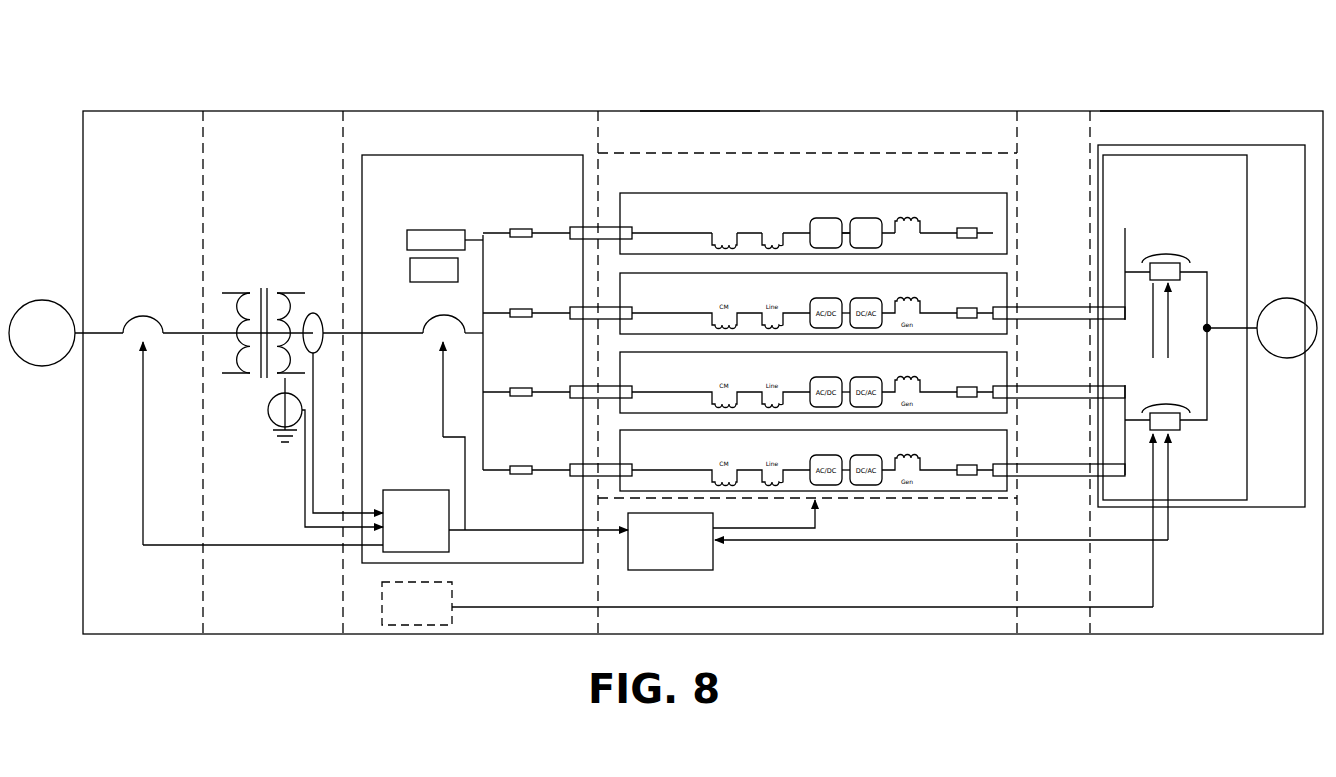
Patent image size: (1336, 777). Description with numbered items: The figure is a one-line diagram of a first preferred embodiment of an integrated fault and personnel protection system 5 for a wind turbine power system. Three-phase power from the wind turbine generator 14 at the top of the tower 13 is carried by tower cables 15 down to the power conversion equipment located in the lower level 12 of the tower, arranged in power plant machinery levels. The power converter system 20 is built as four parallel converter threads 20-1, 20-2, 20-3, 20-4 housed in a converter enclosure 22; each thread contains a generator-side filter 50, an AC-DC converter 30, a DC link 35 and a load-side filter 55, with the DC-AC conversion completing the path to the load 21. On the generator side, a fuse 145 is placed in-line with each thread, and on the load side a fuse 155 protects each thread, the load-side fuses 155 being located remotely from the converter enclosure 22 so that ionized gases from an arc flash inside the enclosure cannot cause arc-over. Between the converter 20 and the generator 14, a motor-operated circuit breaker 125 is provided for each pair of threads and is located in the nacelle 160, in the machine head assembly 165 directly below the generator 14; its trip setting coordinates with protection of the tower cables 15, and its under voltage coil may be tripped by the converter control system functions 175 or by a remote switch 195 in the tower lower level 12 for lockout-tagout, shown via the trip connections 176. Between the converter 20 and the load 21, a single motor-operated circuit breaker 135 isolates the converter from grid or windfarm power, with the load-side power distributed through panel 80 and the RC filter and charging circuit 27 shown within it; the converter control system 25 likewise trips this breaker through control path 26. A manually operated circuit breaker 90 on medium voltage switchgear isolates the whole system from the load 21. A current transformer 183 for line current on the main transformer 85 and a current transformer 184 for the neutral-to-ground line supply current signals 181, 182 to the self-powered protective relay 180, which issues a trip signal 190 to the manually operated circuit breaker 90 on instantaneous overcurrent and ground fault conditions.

The integrated fault and personnel protection system 5 is at (659, 55).
The tower lower level 12 is at (678, 111).
The tower 13 is at (1162, 111).
The wind turbine generator 14 is at (1287, 298).
The tower cables 15 is at (1036, 226).
The power converter system 20 is at (724, 244).
The first converter thread 20-1 is at (848, 155).
The second converter thread 20-2 is at (980, 273).
The third converter thread 20-3 is at (985, 352).
The fourth converter thread 20-4 is at (985, 430).
The load 21 is at (34, 300).
The converter enclosure 22 is at (648, 153).
The converter control system 25 is at (713, 556).
The converter control signal line 26 is at (815, 532).
The RC filter and charge circuit 27 is at (410, 268).
The AC-DC converter 30 is at (866, 217).
The DC link 35 is at (846, 228).
The generator-side filter 50 is at (822, 216).
The load-side filter 55 is at (770, 244).
The power distribution panel 80 is at (488, 155).
The main transformer 85 is at (245, 292).
The manually operated circuit breaker 90 is at (163, 323).
The motor-operated circuit breaker 125 is at (1189, 262).
The motor-operated circuit breaker 135 is at (424, 327).
The generator-side fuse 145 is at (966, 227).
The load-side fuse 155 is at (523, 228).
The nacelle 160 is at (1236, 145).
The machine head assembly 165 is at (1249, 208).
The converter control system functions 175 is at (1168, 520).
The breaker trip line 176 is at (441, 358).
The protective relay 180 is at (458, 530).
The current signal 181 is at (363, 465).
The current signal 182 is at (295, 444).
The current transformer 183 is at (313, 312).
The current transformer 184 is at (268, 404).
The trip signal 190 is at (143, 418).
The remote switch 195 is at (382, 600).